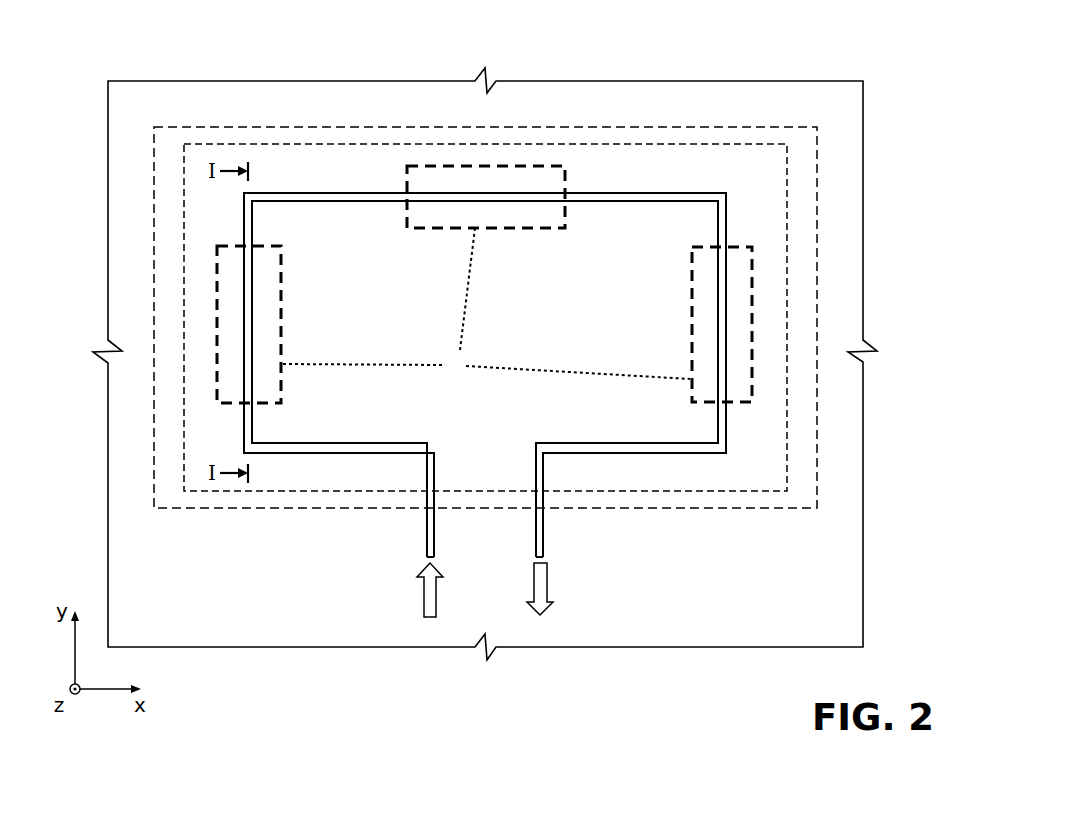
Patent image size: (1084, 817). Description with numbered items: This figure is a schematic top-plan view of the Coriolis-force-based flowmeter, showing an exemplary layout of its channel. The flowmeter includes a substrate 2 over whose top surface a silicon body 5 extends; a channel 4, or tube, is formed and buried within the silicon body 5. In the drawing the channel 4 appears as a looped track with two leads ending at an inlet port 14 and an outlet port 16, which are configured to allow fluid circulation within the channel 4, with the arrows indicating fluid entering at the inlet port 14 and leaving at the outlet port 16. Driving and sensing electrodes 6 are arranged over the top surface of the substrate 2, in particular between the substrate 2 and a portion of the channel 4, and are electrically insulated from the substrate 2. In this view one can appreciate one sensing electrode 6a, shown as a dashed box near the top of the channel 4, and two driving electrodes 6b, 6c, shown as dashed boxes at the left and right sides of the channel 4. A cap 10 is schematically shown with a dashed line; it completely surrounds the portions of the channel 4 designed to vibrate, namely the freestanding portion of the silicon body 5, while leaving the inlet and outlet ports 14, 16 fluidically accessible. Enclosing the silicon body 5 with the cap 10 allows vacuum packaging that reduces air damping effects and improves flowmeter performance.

The substrate 2 is at (874, 196).
The channel 4 is at (327, 195).
The silicon body 5 is at (775, 92).
The driving and sensing electrodes 6 is at (486, 304).
The sensing electrode 6a is at (533, 230).
The driving electrode 6b is at (283, 327).
The driving electrode 6c is at (692, 325).
The cap 10 is at (748, 510).
The inlet port 14 is at (419, 562).
The outlet port 16 is at (554, 562).